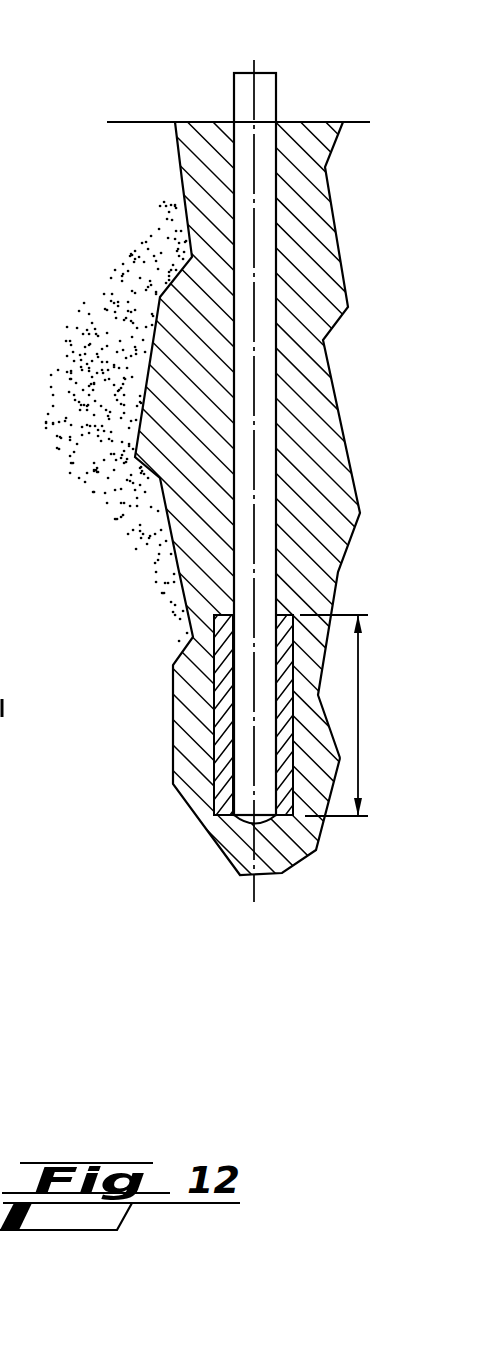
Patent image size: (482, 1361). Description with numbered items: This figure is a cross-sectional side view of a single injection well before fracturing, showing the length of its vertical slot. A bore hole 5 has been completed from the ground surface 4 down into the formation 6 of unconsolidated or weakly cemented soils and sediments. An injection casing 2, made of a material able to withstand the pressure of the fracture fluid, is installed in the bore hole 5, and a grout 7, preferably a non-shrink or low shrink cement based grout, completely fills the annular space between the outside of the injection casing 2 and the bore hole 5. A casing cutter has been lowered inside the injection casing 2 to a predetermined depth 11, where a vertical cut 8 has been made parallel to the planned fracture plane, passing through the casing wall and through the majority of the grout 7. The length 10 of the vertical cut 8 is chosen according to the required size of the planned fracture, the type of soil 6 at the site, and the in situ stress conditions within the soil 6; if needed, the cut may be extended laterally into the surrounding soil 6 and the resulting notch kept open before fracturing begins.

The injection casing 2 is at (263, 72).
The ground surface 4 is at (168, 120).
The bore hole 5 is at (347, 428).
The formation 6 is at (86, 332).
The grout 7 is at (200, 532).
The vertical cut 8 is at (213, 723).
The length of the vertical cut 10 is at (358, 703).
The predetermined depth 11 is at (224, 816).